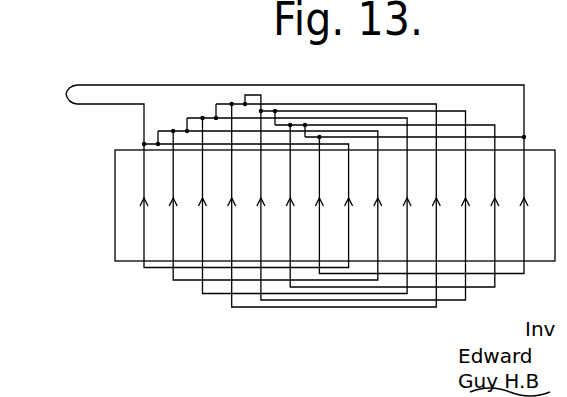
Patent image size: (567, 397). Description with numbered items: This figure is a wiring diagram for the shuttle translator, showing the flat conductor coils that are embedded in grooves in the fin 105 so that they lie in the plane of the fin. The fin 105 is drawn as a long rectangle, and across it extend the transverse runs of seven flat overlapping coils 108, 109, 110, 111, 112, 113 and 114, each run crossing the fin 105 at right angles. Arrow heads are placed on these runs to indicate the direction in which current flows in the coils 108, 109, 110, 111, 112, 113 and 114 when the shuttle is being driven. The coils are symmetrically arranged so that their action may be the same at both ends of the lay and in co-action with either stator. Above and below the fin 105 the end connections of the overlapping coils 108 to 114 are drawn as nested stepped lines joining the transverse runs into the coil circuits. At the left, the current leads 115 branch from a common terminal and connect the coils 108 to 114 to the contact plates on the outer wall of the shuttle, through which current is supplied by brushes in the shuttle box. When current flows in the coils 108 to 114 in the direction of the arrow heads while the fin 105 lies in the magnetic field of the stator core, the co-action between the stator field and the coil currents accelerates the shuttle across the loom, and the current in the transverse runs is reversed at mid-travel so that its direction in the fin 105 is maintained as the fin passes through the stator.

The fin 105 is at (120, 170).
The conductor coil 108 is at (361, 275).
The conductor coil 109 is at (304, 302).
The conductor coil 110 is at (285, 304).
The conductor coil 111 is at (250, 311).
The conductor coil 112 is at (207, 297).
The conductor coil 113 is at (177, 282).
The conductor coil 114 is at (150, 268).
The current leads 115 is at (278, 117).